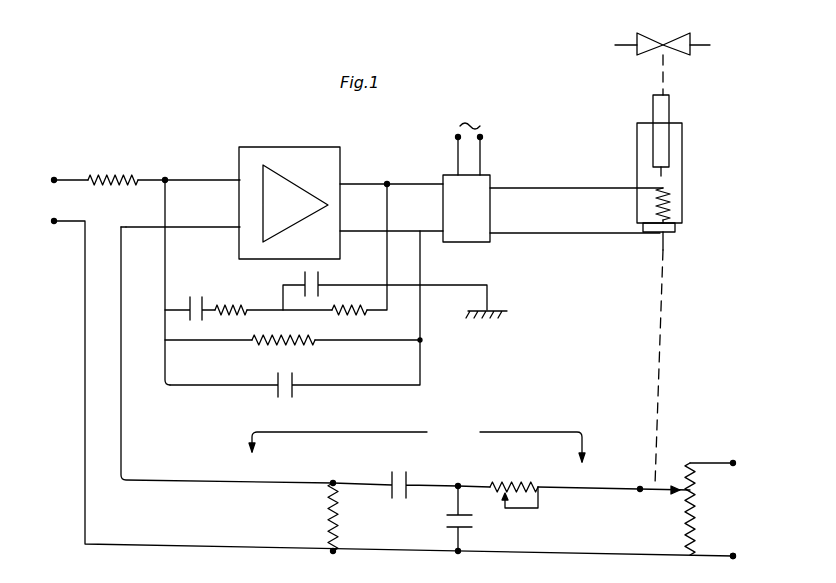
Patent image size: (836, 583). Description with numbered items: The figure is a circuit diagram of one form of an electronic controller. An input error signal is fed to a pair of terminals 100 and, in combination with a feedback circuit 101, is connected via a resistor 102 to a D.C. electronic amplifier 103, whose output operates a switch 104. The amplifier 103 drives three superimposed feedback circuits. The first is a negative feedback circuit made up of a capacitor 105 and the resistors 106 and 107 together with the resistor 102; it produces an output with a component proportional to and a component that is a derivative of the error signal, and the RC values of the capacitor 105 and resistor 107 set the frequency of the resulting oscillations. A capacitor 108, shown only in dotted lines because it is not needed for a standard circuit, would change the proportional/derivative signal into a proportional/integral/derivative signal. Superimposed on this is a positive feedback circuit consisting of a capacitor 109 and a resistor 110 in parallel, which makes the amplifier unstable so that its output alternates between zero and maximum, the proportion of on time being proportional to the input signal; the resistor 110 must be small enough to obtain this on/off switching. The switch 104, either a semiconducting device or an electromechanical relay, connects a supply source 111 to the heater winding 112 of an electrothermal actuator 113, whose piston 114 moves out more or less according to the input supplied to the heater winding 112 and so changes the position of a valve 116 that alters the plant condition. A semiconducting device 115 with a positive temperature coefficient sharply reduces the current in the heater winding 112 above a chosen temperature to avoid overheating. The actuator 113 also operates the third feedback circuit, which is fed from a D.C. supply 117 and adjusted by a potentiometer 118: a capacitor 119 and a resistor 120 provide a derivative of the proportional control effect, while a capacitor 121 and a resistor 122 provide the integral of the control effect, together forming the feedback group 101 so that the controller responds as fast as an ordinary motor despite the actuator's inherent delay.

The terminals 100 is at (394, 368).
The feedback circuit 101 is at (353, 355).
The resistor 102 is at (113, 172).
The amplifier 103 is at (295, 140).
The switch 104 is at (490, 205).
The capacitor 105 is at (326, 280).
The resistor 106 is at (240, 308).
The resistor 107 is at (355, 313).
The capacitor 108 is at (195, 296).
The capacitor 109 is at (276, 397).
The resistor 110 is at (292, 344).
The supply source 111 is at (472, 137).
The heater winding 112 is at (672, 201).
The electrothermal actuator 113 is at (637, 147).
The piston 114 is at (669, 108).
The semiconducting device 115 is at (668, 235).
The valve 116 is at (663, 55).
The D.C. supply 117 is at (733, 554).
The potentiometer 118 is at (696, 503).
The capacitor 119 is at (476, 521).
The resistor 120 is at (513, 480).
The capacitor 121 is at (400, 500).
The resistor 122 is at (327, 516).